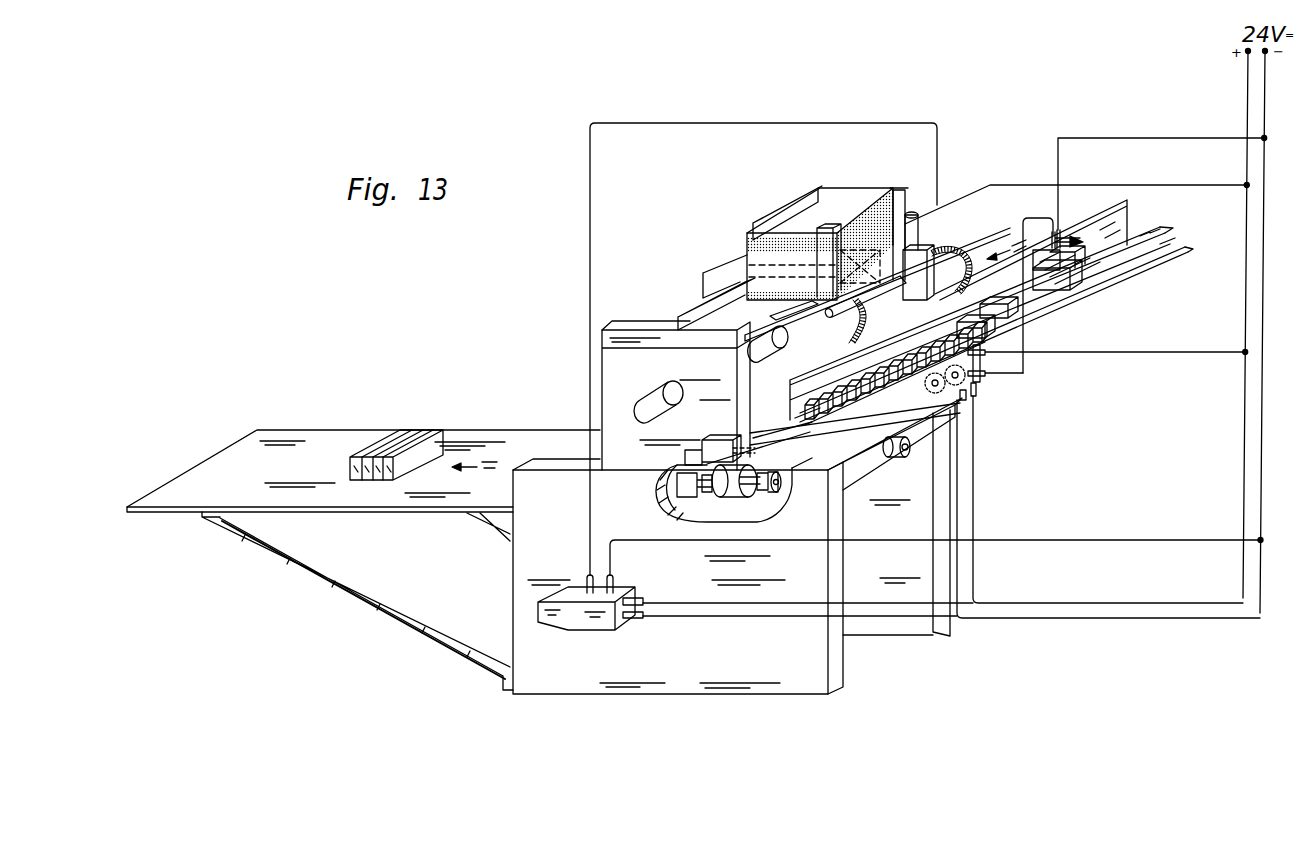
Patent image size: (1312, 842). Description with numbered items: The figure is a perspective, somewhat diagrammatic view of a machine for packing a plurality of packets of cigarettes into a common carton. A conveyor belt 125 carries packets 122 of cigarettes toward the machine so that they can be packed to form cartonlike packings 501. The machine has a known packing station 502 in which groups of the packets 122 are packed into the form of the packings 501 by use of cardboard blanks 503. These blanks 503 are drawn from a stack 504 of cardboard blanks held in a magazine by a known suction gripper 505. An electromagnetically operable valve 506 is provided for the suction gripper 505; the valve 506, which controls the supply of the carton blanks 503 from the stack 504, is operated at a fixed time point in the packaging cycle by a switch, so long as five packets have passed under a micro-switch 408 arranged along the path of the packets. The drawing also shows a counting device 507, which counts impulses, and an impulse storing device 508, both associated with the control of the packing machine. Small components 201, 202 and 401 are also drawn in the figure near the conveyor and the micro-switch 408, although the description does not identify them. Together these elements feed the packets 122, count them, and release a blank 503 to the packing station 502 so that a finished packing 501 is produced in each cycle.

The packets of cigarettes 122 is at (965, 320).
The conveyor belt 125 is at (1147, 262).
The drive motor sensor 201 is at (980, 389).
The drive gear 202 is at (962, 397).
The card stop block 401 is at (1042, 300).
The micro-switch 408 is at (1045, 260).
The cartonlike packings 501 is at (411, 435).
The packing station 502 is at (622, 356).
The cardboard blanks 503 is at (870, 225).
The stack of cardboard blanks 504 is at (753, 236).
The suction gripper 505 is at (832, 316).
The electromagnetically operable valve 506 is at (930, 246).
The counting device 507 is at (985, 360).
The impulse storing device 508 is at (578, 622).